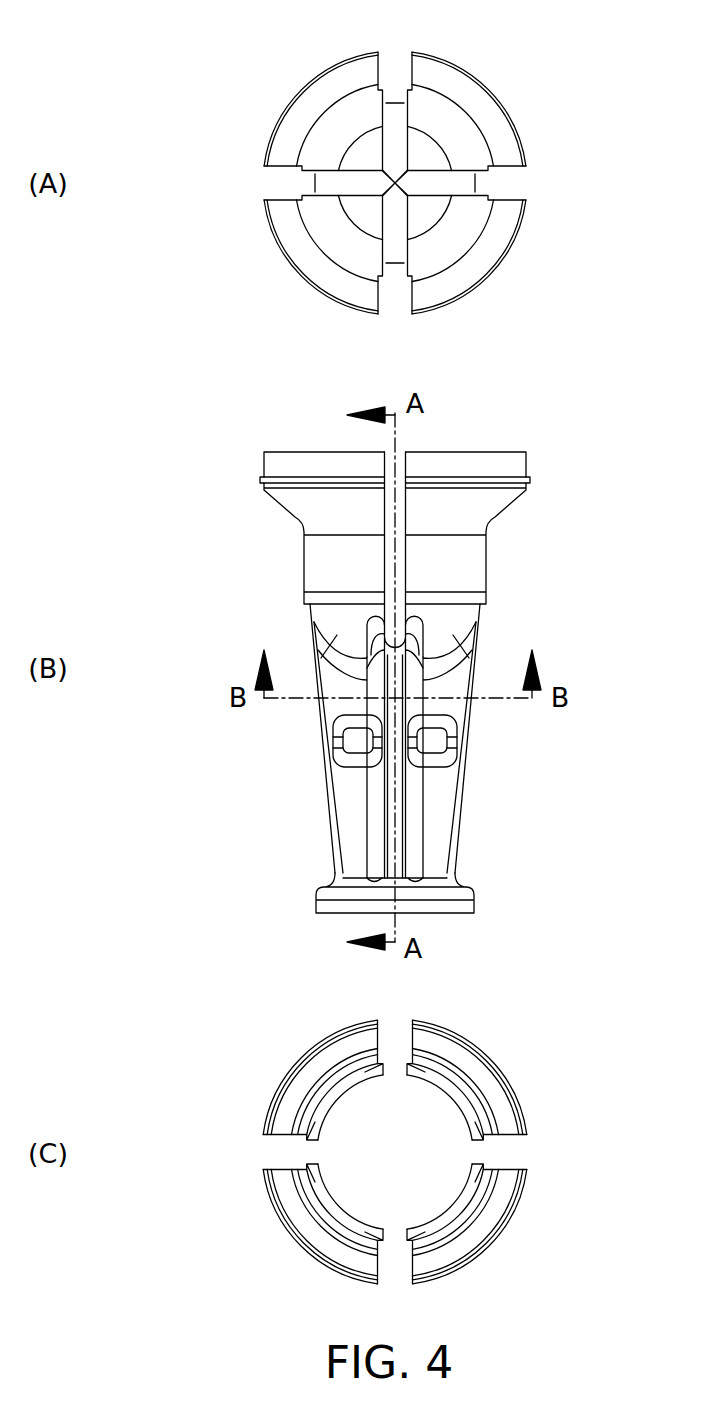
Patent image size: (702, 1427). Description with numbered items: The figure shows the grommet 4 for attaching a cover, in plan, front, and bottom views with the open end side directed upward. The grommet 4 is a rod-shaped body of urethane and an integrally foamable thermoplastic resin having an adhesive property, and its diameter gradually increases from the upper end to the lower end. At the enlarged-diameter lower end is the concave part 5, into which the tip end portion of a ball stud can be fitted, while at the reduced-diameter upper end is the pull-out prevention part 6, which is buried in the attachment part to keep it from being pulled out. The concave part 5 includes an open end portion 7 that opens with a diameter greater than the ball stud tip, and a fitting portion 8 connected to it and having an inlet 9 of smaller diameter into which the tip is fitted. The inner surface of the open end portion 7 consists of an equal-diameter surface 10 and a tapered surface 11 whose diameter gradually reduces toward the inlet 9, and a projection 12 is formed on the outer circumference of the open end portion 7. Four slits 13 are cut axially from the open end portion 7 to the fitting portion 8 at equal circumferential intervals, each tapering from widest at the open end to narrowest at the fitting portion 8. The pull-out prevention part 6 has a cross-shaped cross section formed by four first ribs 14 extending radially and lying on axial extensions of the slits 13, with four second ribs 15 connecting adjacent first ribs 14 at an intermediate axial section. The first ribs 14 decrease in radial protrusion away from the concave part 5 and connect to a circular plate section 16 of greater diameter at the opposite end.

The grommet 4 is at (533, 543).
The concave part 5 is at (557, 562).
The pull-out prevention part 6 is at (470, 817).
The open end portion 7 is at (395, 251).
The fitting portion 8 is at (327, 263).
The inlet 9 is at (340, 98).
The equal-diameter surface 10 is at (478, 254).
The tapered surface 11 is at (495, 126).
The projection 12 is at (428, 667).
The slit 13 is at (395, 667).
The first rib 14 is at (328, 768).
The second rib 15 is at (333, 738).
The circular plate section 16 is at (473, 905).